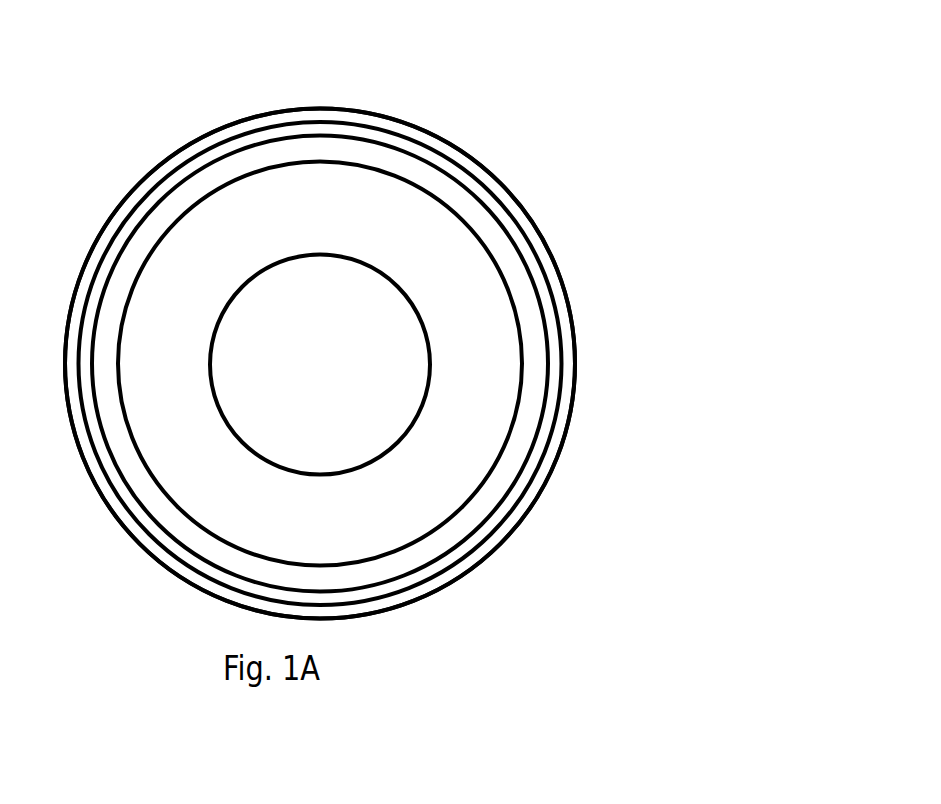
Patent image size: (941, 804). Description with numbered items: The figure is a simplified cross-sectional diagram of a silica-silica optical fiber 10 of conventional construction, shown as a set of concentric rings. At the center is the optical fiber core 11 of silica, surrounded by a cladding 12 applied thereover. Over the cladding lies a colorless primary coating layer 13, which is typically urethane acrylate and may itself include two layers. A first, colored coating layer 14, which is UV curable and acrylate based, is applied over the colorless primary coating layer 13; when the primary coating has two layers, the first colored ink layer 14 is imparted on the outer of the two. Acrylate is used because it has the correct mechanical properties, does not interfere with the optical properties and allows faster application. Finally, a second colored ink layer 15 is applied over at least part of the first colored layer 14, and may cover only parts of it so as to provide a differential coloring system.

The optical fiber 10 is at (360, 138).
The optical fiber core 11 is at (371, 327).
The cladding 12 is at (466, 269).
The colorless primary coating layer 13 is at (525, 303).
The first colored coating layer 14 is at (562, 398).
The second colored ink layer 15 is at (502, 547).